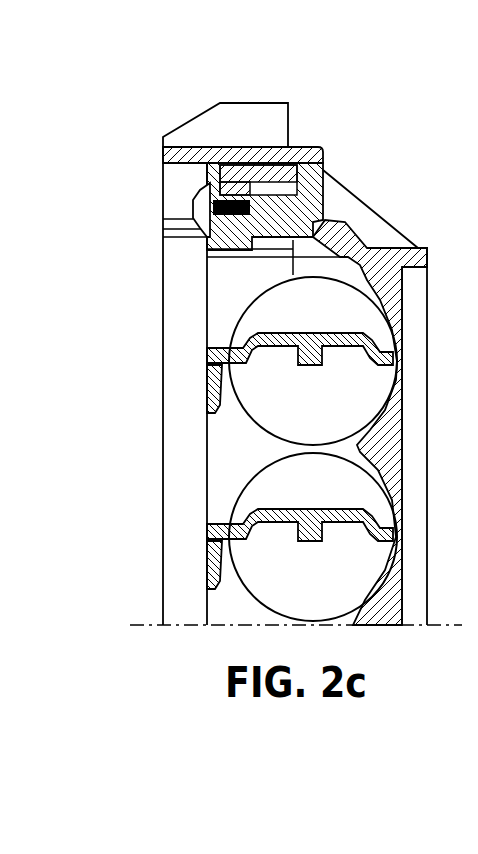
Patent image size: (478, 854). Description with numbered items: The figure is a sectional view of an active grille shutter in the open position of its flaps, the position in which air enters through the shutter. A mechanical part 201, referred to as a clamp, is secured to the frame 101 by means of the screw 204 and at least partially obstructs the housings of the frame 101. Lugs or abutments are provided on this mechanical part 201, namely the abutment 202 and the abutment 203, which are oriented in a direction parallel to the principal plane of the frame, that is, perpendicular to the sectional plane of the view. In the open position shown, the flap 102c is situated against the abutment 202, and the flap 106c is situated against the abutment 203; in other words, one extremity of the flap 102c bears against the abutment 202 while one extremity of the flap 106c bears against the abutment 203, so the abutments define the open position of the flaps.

The frame 101 is at (300, 148).
The mechanical part 201 is at (220, 180).
The screw 204 is at (193, 202).
The flap 102c is at (230, 343).
The abutment 202 is at (207, 380).
The flap 106c is at (230, 520).
The abutment 203 is at (207, 572).